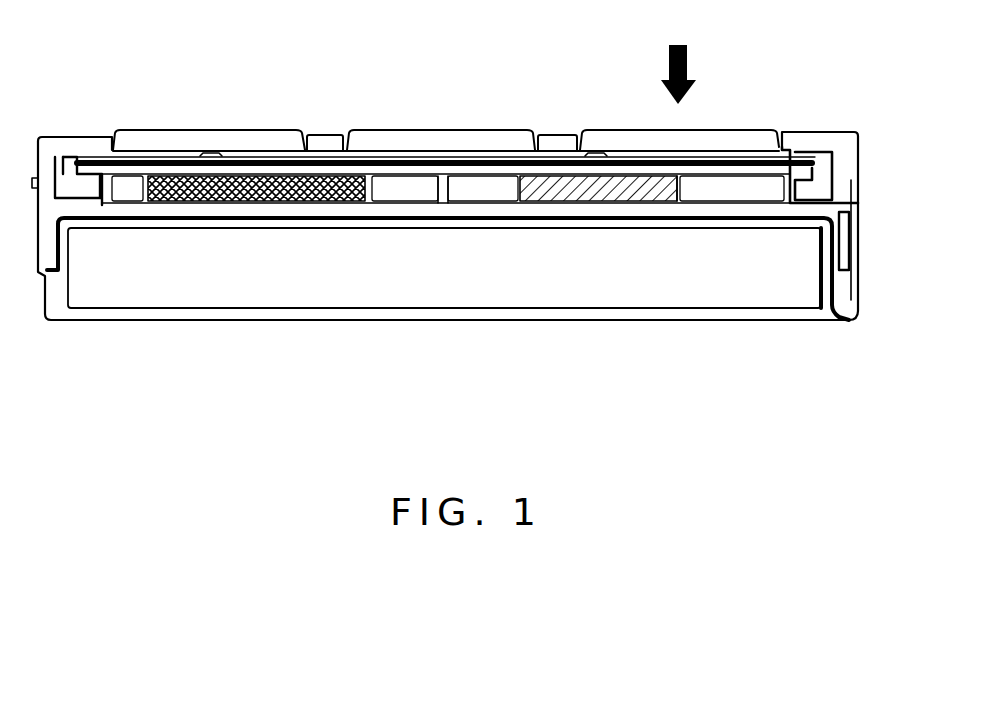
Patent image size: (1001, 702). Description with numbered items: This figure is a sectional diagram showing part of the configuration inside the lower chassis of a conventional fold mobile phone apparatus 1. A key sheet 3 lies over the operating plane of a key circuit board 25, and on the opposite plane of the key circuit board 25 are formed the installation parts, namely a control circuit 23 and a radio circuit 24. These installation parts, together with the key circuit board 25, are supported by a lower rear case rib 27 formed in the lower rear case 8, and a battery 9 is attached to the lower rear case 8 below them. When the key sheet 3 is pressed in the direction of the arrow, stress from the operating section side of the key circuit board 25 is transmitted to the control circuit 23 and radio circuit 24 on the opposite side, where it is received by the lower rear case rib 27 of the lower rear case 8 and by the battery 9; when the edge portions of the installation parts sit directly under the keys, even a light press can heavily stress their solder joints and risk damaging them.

The battery pack housing 1 is at (842, 145).
The key sheet 3 is at (607, 140).
The lower rear case 8 is at (838, 210).
The battery 9 is at (512, 283).
The control circuit 23 is at (593, 185).
The radio circuit 24 is at (270, 205).
The key circuit board 25 is at (760, 165).
The lower rear case rib 27 is at (783, 192).